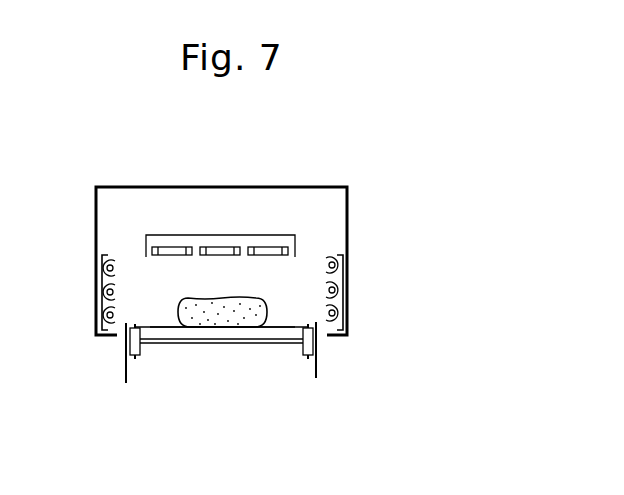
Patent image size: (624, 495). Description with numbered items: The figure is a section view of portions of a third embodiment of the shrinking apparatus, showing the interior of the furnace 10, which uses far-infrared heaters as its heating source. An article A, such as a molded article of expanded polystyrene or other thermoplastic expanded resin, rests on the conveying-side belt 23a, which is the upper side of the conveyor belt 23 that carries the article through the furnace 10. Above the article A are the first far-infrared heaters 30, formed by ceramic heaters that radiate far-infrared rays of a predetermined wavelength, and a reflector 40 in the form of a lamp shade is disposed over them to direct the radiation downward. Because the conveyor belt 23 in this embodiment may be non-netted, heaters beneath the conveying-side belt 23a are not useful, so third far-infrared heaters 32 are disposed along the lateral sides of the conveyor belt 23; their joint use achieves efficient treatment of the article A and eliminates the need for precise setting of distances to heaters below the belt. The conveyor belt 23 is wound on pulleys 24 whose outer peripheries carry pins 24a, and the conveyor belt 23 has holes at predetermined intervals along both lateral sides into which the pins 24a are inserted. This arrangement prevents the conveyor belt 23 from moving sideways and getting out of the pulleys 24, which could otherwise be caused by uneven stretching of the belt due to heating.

The furnace 10 is at (337, 181).
The reflector 40 is at (190, 235).
The first far-infrared heaters 30 is at (228, 247).
The third far-infrared heaters 32 is at (102, 290).
The article A is at (253, 307).
The conveyor belt 23 is at (227, 327).
The conveying-side belt 23a is at (276, 328).
The pulleys 24 is at (140, 350).
The pins 24a is at (133, 358).